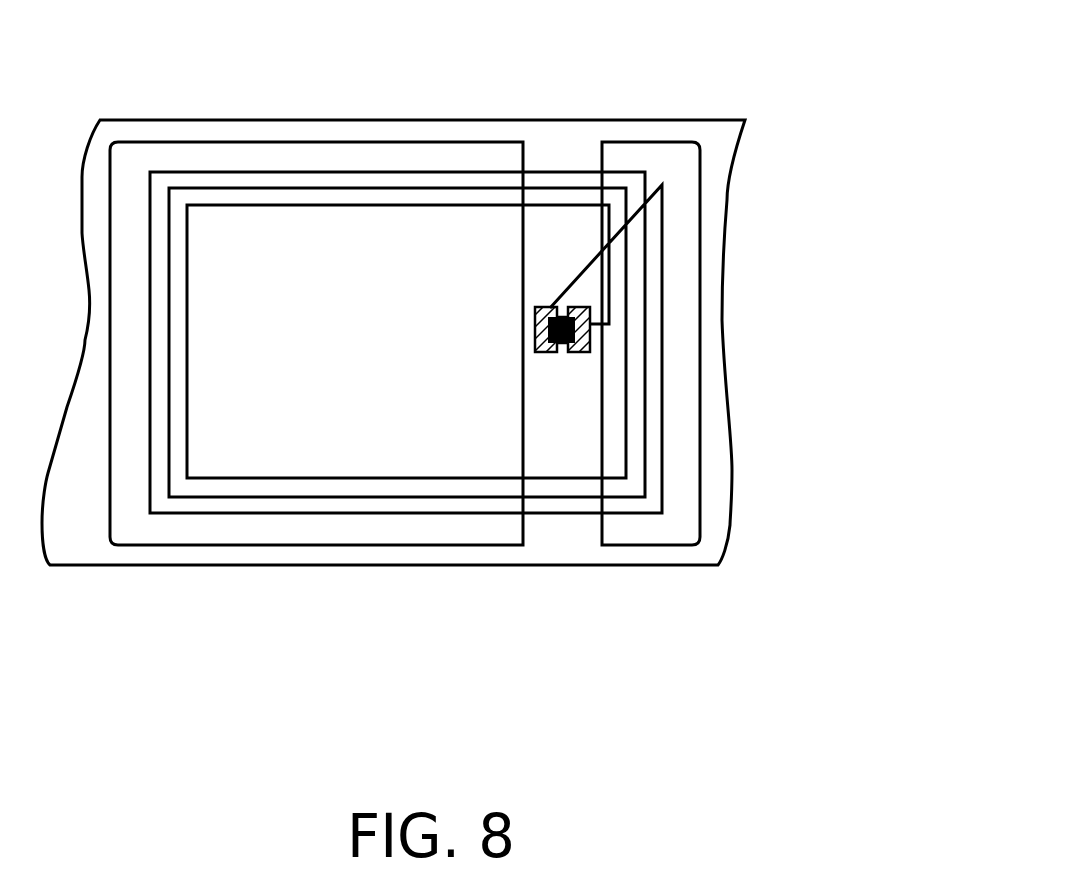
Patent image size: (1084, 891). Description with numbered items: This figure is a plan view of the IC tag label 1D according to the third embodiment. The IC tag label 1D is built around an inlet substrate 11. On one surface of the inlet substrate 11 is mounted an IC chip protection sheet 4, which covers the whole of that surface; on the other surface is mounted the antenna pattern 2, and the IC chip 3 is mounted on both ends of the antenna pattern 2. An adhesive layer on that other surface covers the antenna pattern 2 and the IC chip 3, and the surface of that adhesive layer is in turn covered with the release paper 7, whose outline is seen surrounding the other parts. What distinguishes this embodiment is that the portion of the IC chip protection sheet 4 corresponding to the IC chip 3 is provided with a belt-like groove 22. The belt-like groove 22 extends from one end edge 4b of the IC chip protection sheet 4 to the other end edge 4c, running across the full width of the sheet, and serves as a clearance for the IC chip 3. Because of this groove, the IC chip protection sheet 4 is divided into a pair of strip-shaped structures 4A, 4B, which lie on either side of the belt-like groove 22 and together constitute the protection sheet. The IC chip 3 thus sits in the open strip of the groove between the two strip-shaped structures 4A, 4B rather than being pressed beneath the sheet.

The IC tag label 1D is at (836, 90).
The antenna pattern 2 is at (568, 172).
The IC chip 3 is at (535, 328).
The IC chip protection sheet 4 is at (707, 638).
The strip-shaped structure 4A is at (488, 535).
The strip-shaped structure 4B is at (680, 535).
The end edge 4b is at (563, 553).
The end edge 4c is at (542, 135).
The release paper 7 is at (717, 135).
The inlet substrate 11 is at (702, 480).
The belt-like groove 22 is at (570, 423).